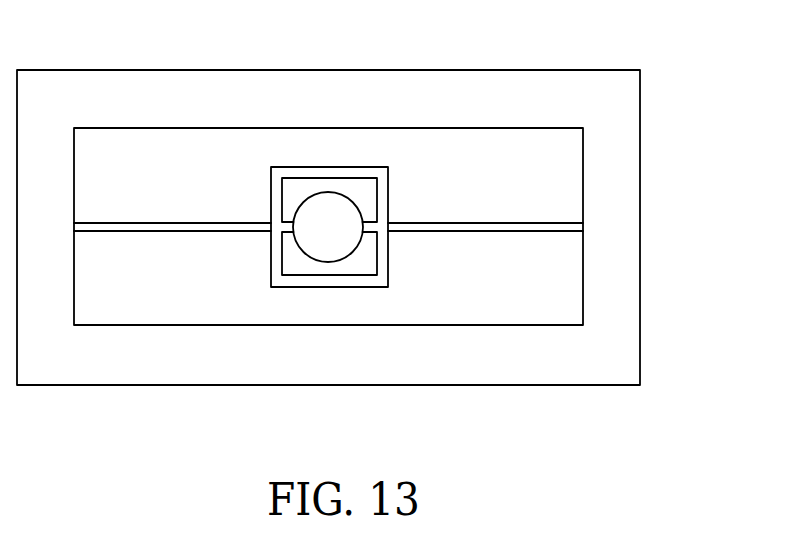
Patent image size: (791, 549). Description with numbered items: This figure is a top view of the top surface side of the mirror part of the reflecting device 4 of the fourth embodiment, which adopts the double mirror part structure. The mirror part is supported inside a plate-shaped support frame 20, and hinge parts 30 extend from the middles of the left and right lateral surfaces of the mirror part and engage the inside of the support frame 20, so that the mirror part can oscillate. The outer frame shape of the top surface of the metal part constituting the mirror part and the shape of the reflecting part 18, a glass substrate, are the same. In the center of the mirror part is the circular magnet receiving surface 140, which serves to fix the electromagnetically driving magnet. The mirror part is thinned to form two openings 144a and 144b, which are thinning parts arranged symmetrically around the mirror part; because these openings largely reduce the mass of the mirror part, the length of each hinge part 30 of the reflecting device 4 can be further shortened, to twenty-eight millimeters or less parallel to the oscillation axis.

The reflecting device 4 is at (706, 456).
The reflecting part (glass substrate) 18 is at (329, 227).
The support frame 20 is at (525, 371).
The hinge part 30 is at (493, 222).
The magnet receiving surface 140 is at (311, 250).
The opening (thinning part) 144a is at (299, 193).
The opening (thinning part) 144b is at (332, 265).